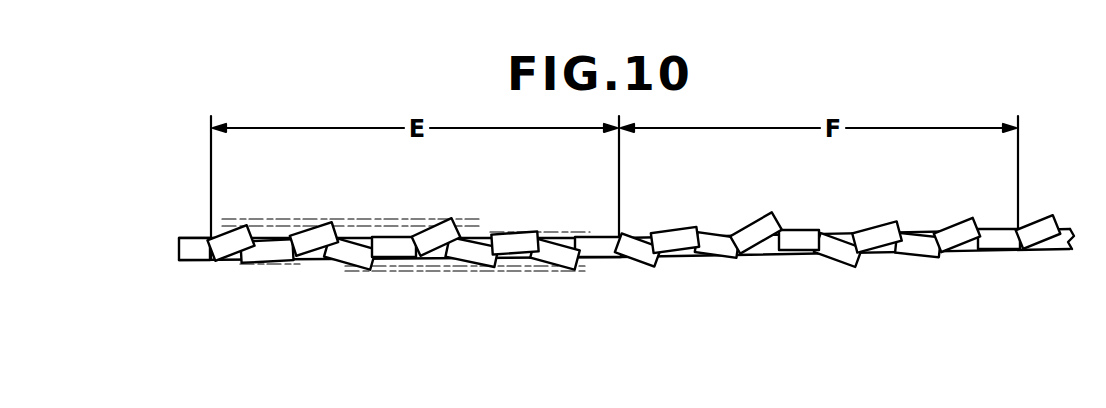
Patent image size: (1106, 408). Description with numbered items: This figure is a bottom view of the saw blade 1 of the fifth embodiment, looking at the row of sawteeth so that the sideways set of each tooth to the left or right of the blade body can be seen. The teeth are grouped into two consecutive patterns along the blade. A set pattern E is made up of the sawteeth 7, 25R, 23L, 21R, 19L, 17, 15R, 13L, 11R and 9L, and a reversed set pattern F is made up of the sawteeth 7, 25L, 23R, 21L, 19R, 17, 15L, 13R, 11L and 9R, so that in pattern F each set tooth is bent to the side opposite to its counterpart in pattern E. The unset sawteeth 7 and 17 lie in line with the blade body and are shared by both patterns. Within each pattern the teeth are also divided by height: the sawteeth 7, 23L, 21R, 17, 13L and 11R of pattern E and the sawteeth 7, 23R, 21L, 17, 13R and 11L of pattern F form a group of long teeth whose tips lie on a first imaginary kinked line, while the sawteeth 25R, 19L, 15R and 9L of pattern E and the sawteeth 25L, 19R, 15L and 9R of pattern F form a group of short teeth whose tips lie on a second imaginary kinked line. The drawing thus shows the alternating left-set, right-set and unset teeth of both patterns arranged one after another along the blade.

The tape carrier strip 1 is at (193, 232).
The sawtooth 7 is at (199, 256).
The sawtooth 9L is at (241, 226).
The sawtooth 9R is at (648, 259).
The sawtooth 11L is at (690, 238).
The sawtooth 11R is at (282, 261).
The sawtooth 13L is at (322, 228).
The sawtooth 13R is at (727, 251).
The sawtooth 15L is at (767, 220).
The sawtooth 15R is at (365, 270).
The sawtooth 17 is at (396, 246).
The sawtooth 19L is at (446, 228).
The sawtooth 19R is at (855, 263).
The sawtooth 21L is at (887, 233).
The sawtooth 21R is at (485, 261).
The sawtooth 23L is at (528, 242).
The sawtooth 23R is at (930, 259).
The sawtooth 25L is at (965, 222).
The sawtooth 25R is at (567, 268).